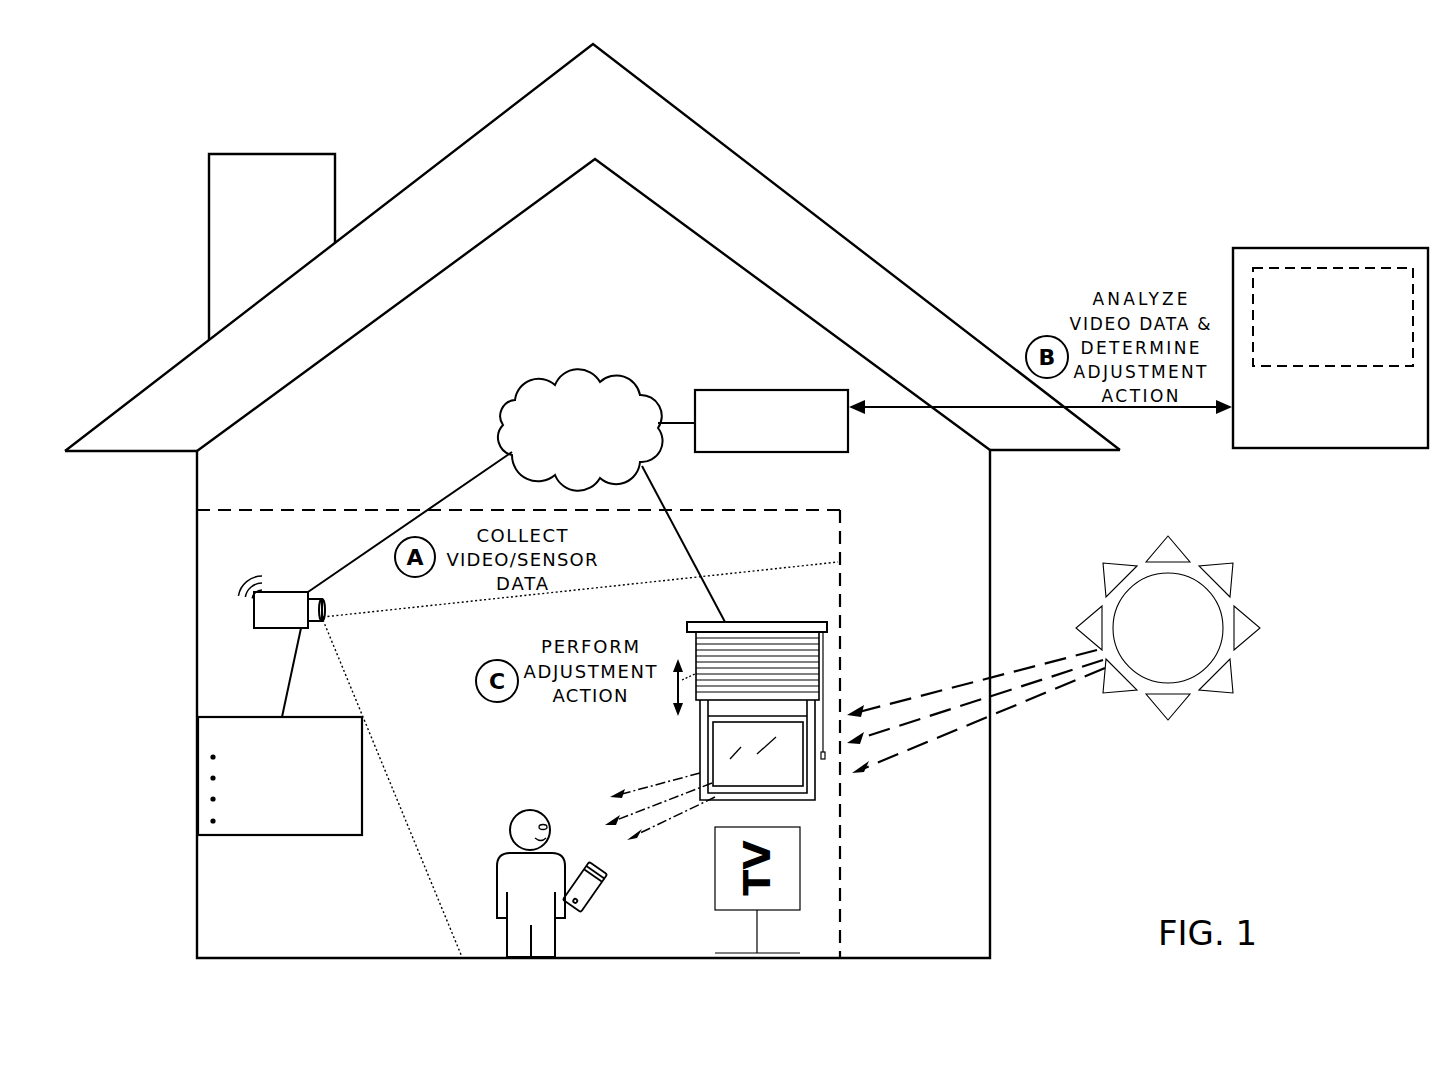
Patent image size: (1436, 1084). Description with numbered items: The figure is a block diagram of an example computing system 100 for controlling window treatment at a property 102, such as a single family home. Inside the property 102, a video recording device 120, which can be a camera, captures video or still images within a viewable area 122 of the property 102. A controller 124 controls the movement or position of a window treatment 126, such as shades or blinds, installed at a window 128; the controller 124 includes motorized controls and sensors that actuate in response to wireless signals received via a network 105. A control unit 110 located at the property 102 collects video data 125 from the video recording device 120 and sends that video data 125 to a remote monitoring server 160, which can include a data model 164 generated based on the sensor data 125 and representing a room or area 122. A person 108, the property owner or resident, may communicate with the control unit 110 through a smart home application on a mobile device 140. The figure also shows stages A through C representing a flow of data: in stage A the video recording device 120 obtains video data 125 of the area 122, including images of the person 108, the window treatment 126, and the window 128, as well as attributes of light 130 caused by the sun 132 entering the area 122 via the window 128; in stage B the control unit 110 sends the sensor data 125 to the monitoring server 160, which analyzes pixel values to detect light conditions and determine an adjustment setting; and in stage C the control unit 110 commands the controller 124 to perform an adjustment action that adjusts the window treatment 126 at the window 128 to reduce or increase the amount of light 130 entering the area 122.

The computing system 100 is at (866, 147).
The property 102 is at (938, 308).
The network 105 is at (510, 392).
The person 108 is at (503, 853).
The control unit 110 is at (722, 390).
The video recording device 120 is at (267, 628).
The viewable area 122 is at (418, 845).
The controller 124 is at (765, 622).
The video data 125 is at (888, 409).
The window treatment 126 is at (818, 663).
The window 128 is at (718, 752).
The light 130 is at (622, 818).
The sun 132 is at (1160, 552).
The mobile device 140 is at (598, 885).
The monitoring server 160 is at (1330, 369).
The data model 164 is at (1315, 341).